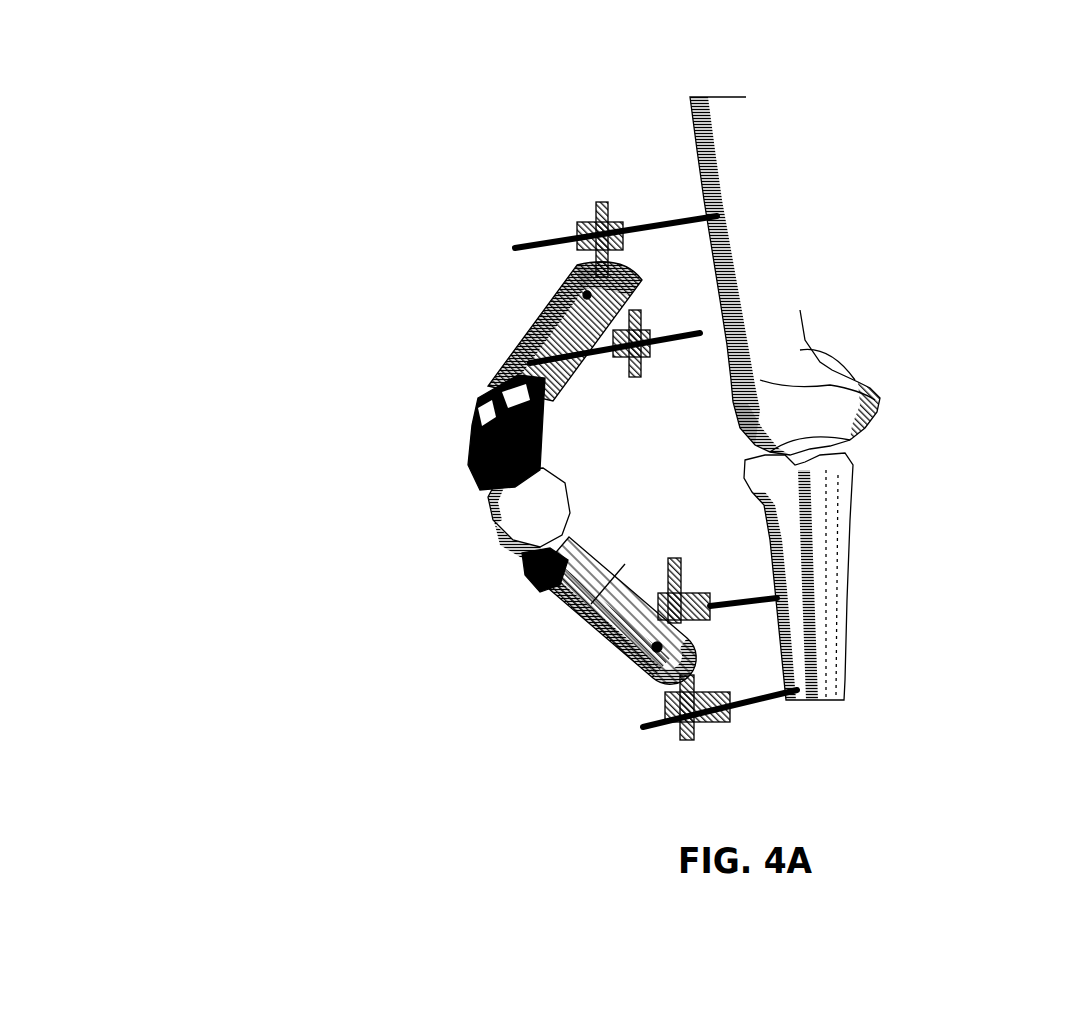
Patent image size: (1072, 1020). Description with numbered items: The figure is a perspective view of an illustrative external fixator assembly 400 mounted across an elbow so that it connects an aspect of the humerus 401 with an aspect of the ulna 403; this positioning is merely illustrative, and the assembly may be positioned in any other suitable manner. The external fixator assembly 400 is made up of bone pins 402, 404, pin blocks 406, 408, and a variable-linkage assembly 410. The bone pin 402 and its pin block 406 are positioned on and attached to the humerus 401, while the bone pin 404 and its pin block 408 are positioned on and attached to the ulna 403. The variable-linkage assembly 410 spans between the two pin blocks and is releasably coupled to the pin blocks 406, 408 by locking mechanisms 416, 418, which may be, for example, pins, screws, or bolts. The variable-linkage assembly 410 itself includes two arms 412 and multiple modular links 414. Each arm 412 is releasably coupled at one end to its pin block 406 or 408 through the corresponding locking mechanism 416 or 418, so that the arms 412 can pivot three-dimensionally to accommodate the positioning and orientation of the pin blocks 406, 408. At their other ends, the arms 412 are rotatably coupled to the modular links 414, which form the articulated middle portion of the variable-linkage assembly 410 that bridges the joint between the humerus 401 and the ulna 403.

The external fixator assembly 400 is at (262, 221).
The humerus 401 is at (763, 230).
The bone pin 402 is at (660, 217).
The ulna 403 is at (830, 568).
The bone pin 404 is at (740, 703).
The pin block 406 is at (598, 227).
The pin block 408 is at (677, 711).
The variable-linkage assembly 410 is at (400, 568).
The arm 412 is at (532, 320).
The modular links 414 is at (545, 585).
The locking mechanism 416 is at (587, 295).
The locking mechanism 418 is at (663, 658).